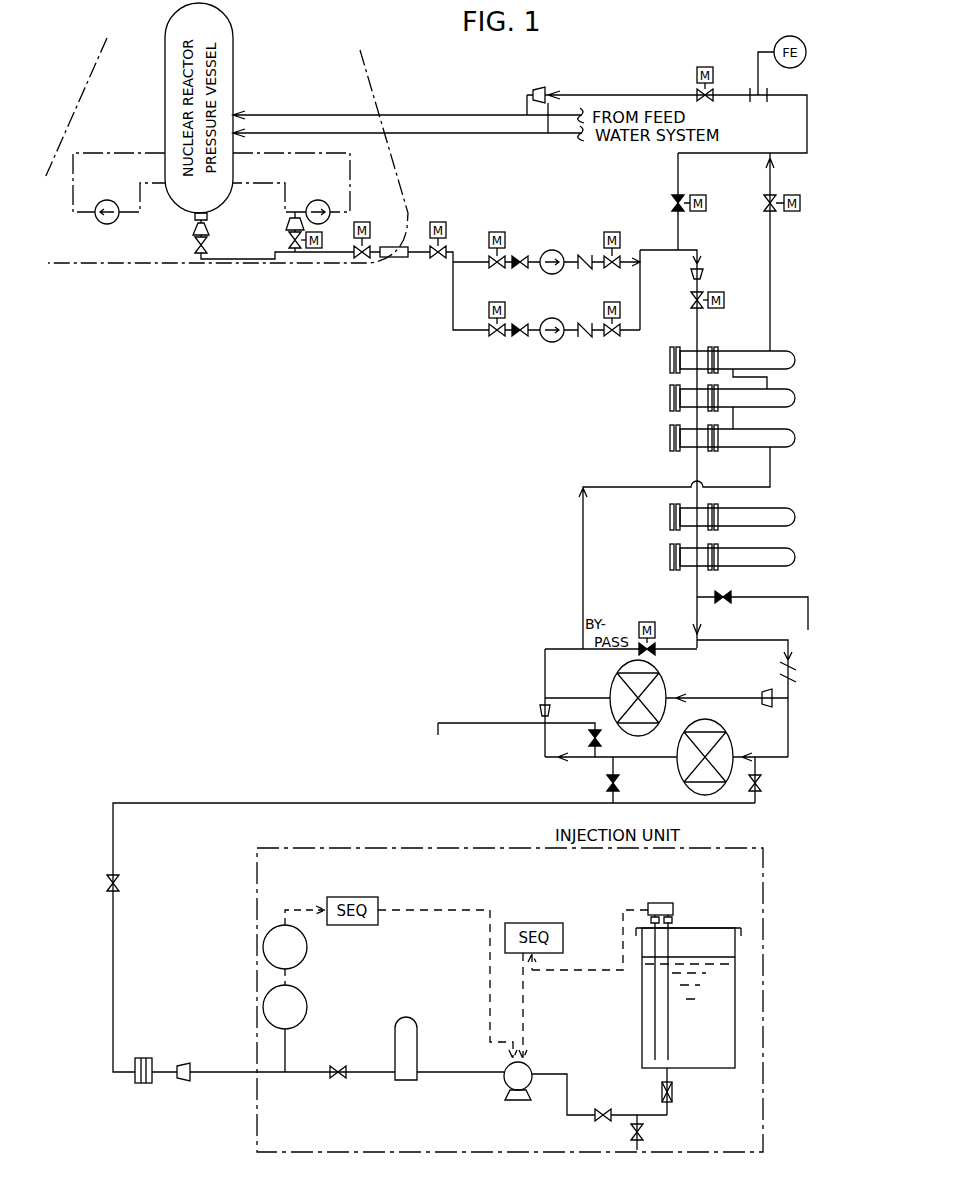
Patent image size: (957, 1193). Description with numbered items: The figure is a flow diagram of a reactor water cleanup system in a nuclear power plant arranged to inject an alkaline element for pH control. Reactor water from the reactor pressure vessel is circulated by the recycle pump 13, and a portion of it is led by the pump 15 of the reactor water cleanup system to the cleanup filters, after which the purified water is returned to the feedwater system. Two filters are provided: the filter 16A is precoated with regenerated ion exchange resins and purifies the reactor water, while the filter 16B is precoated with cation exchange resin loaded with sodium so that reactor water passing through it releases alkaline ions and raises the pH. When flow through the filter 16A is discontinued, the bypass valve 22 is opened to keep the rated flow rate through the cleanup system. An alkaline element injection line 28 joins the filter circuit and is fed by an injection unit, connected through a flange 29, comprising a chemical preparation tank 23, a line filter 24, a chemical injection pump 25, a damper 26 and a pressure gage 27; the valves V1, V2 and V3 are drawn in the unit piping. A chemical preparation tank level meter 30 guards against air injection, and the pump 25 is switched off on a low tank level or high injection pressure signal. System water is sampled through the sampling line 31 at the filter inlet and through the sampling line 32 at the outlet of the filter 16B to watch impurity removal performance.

The recycle pump 13 is at (119, 215).
The pump of reactor water cleanup system 15 is at (552, 250).
The filter 16A is at (664, 682).
The filter 16B is at (730, 740).
The bypass valve 22 is at (647, 622).
The chemical preparation tank 23 is at (735, 1000).
The line filter 24 is at (674, 1092).
The chemical injection pump 25 is at (518, 1100).
The damper 26 is at (408, 1017).
The pressure gage 27 is at (307, 1003).
The alkaline element injection line 28 is at (263, 803).
The flange 29 is at (150, 1043).
The chemical preparation tank level meter 30 is at (675, 908).
The sampling line 31 is at (770, 597).
The sampling line 32 is at (478, 723).
The valve V1 is at (649, 1132).
The valve V2 is at (628, 1103).
The valve V3 is at (338, 1063).